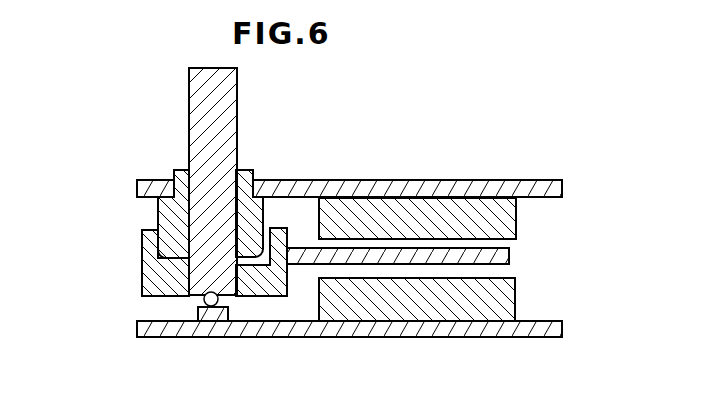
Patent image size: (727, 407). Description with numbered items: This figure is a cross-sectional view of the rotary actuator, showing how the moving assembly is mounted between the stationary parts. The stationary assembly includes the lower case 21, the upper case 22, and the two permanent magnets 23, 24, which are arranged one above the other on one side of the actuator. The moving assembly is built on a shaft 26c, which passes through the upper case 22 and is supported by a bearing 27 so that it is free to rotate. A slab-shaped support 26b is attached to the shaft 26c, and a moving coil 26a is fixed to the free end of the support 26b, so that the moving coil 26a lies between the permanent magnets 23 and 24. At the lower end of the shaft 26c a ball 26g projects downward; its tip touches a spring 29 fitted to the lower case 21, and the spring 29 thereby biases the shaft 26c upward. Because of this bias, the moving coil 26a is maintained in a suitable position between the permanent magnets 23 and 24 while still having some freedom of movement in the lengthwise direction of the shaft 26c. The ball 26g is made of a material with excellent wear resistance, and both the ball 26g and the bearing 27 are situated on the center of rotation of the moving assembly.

The lower case 21 is at (562, 328).
The upper case 22 is at (487, 184).
The permanent magnet 23 is at (510, 292).
The permanent magnet 24 is at (517, 218).
The moving coil 26a is at (510, 253).
The support 26b is at (162, 269).
The shaft 26c is at (205, 118).
The ball 26g is at (205, 302).
The bearing 27 is at (165, 217).
The spring 29 is at (228, 310).